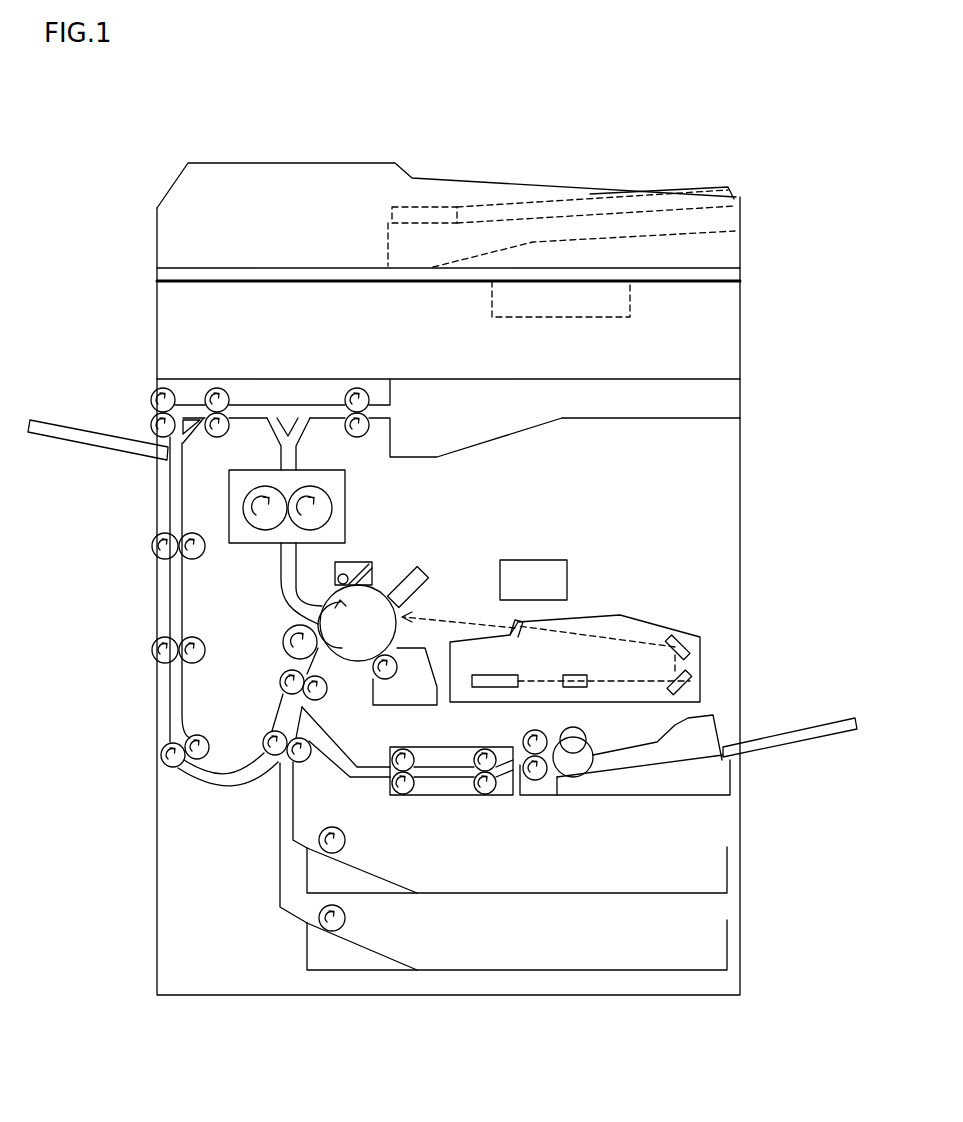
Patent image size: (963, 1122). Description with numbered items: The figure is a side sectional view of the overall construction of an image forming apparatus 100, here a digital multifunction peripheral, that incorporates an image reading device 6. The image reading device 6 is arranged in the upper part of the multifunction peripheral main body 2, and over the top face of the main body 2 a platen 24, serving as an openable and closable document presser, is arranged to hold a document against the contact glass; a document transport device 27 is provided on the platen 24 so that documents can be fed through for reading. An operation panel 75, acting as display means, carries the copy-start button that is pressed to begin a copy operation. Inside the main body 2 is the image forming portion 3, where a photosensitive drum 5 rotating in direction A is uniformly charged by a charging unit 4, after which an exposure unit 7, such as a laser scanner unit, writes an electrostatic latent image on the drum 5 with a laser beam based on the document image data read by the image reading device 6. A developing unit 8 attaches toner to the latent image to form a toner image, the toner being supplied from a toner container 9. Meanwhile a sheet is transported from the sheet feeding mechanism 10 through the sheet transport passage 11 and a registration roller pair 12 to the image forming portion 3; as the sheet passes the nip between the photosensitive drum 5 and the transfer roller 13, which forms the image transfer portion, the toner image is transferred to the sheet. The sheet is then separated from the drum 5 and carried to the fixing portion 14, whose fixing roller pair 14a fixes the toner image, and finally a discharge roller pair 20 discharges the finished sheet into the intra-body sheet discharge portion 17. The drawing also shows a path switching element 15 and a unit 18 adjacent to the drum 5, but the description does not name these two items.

The image forming apparatus 100 is at (658, 156).
The multifunction peripheral main body 2 is at (741, 475).
The document transport device 27 is at (186, 187).
The image reading device 6 is at (157, 324).
The platen 24 is at (742, 272).
The operation panel 75 is at (560, 318).
The discharge roller pair 20 is at (365, 403).
The intra-body sheet discharge portion 17 is at (465, 418).
The path switching guide 15 is at (280, 453).
The fixing portion 14 is at (229, 512).
The fixing roller pair 14a is at (325, 507).
The cleaning unit 18 is at (352, 563).
The image forming portion 3 is at (410, 543).
The photosensitive drum 5 is at (347, 650).
The charging unit 4 is at (420, 583).
The toner container 9 is at (536, 570).
The exposure unit 7 is at (602, 628).
The developing unit 8 is at (405, 693).
The transfer roller 13 is at (284, 648).
The registration roller pair 12 is at (280, 696).
The sheet transport passage 11 is at (283, 788).
The sheet feeding mechanism 10 is at (760, 815).